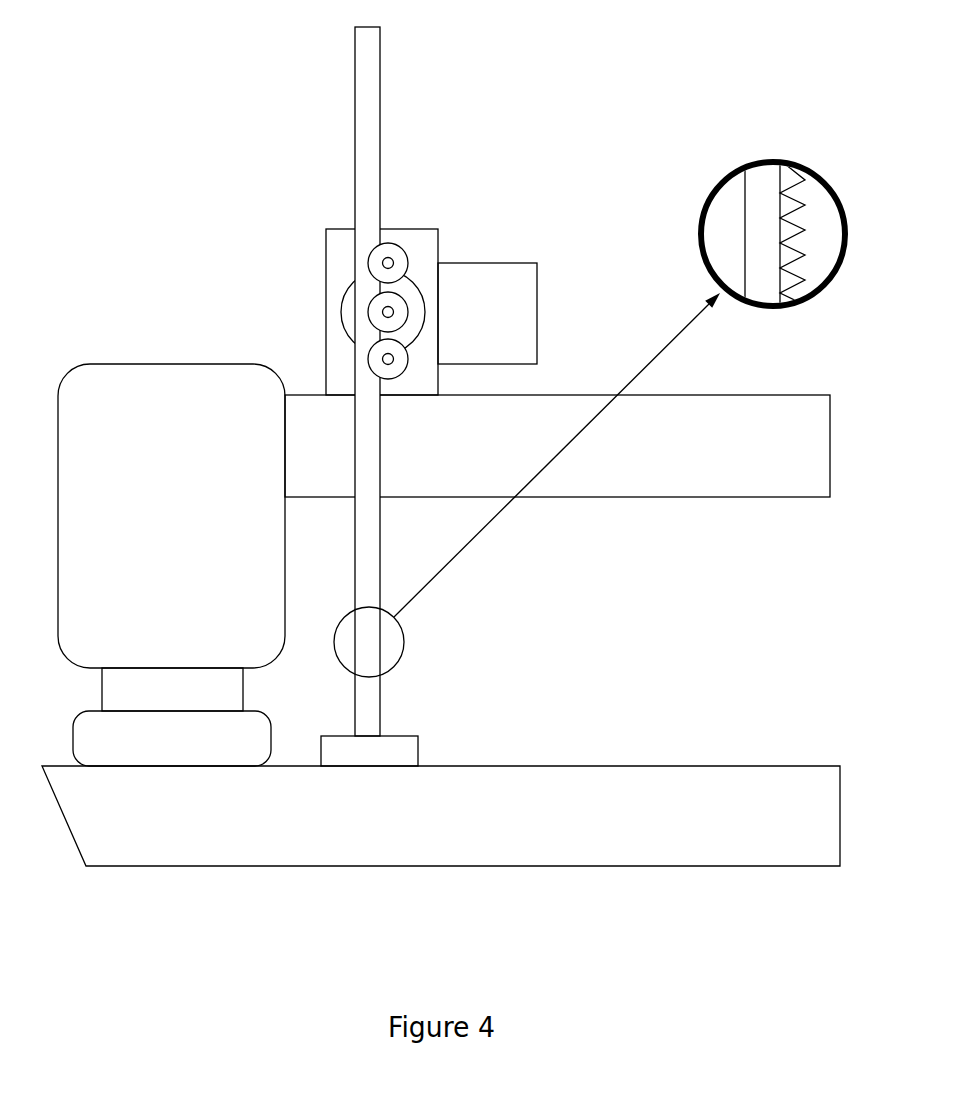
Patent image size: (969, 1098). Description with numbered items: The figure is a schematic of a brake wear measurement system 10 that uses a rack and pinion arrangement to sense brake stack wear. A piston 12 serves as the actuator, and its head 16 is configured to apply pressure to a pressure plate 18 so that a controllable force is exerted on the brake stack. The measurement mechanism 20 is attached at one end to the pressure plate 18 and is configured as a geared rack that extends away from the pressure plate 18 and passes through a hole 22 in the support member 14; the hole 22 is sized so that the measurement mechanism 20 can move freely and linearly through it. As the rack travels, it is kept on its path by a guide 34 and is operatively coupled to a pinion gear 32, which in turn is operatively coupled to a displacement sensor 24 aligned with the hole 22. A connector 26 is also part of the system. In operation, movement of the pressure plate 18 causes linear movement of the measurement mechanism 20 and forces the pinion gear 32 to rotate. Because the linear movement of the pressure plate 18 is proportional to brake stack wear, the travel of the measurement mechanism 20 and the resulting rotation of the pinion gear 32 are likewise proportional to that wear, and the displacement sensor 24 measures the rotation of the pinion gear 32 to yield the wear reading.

The brake wear measurement system 10 is at (152, 174).
The piston 12 is at (128, 382).
The support member 14 is at (760, 480).
The head 16 is at (102, 736).
The pressure plate 18 is at (172, 868).
The measurement mechanism 20 is at (367, 88).
The hole 22 is at (382, 463).
The displacement sensor 24 is at (428, 353).
The connector 26 is at (508, 280).
The pinion gear 32 is at (380, 322).
The guide 34 is at (385, 246).